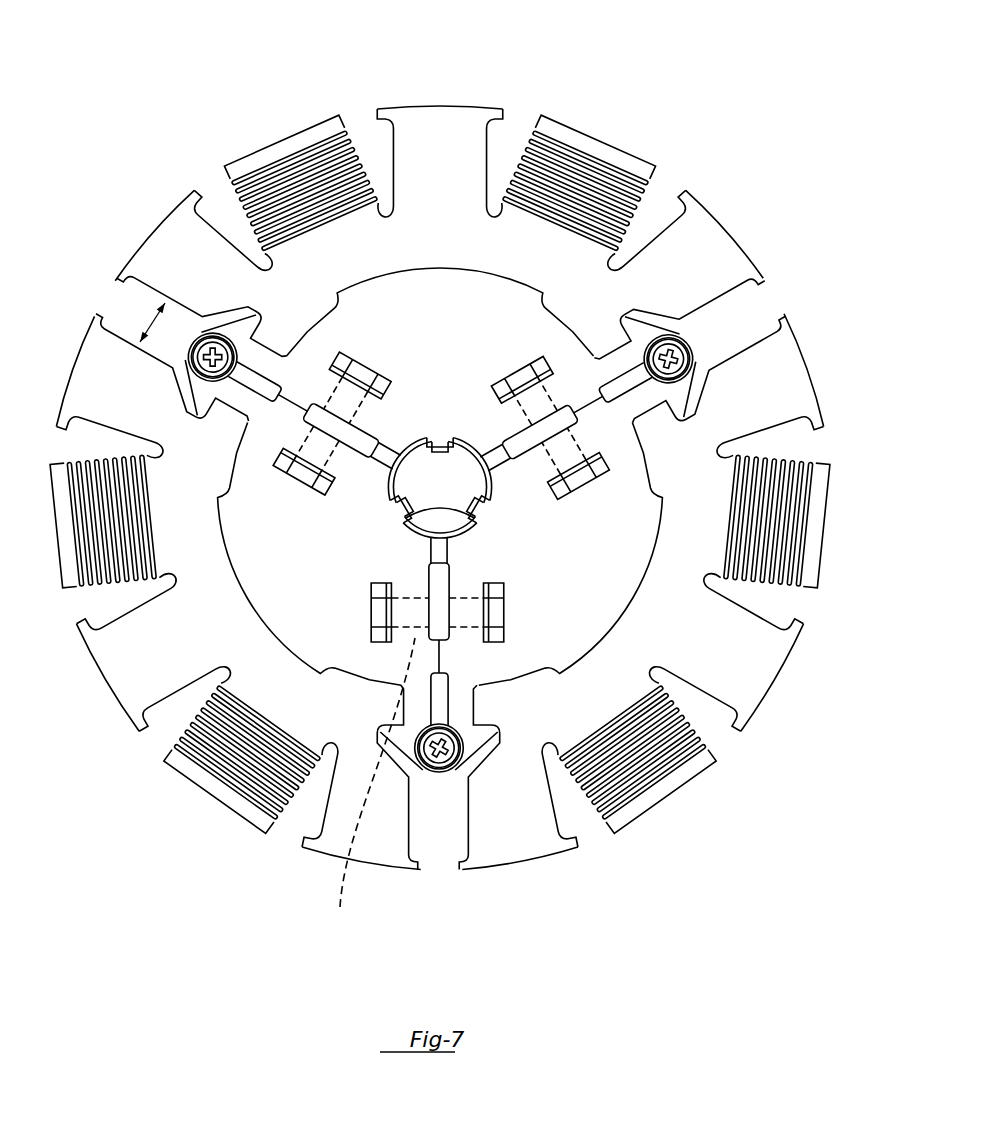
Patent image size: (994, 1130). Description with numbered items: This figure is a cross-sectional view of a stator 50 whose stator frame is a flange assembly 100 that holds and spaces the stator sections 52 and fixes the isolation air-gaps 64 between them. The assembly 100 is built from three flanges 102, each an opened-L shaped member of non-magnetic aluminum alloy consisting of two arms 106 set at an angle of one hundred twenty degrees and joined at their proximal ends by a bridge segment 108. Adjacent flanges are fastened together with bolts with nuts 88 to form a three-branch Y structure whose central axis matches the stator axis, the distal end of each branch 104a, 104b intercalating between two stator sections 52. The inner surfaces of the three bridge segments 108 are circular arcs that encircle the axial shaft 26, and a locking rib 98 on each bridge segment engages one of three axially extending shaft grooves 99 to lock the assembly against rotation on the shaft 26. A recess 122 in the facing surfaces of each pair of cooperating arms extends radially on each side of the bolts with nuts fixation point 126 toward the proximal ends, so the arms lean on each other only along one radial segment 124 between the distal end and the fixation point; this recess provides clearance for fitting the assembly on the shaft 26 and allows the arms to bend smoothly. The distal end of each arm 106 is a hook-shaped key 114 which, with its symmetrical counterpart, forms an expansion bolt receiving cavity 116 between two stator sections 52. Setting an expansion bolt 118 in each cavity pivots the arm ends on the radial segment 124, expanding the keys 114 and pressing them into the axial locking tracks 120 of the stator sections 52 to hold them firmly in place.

The axial shaft 26 is at (421, 492).
The stator 50 is at (469, 487).
The stator section 52 is at (747, 267).
The isolation air-gap 64 is at (155, 318).
The bolts with nuts 88 is at (504, 431).
The locking rib 98 is at (480, 513).
The shaft groove 99 is at (467, 573).
The flange assembly 100 is at (386, 560).
The flange 102 is at (547, 363).
The branch 104a is at (408, 568).
The branch 104b is at (495, 572).
The arm 106 is at (308, 356).
The bridge segment 108 is at (439, 430).
The hook-shaped key 114 is at (239, 320).
The expansion bolt receiving cavity 116 is at (437, 773).
The expansion bolt 118 is at (207, 343).
The axial locking track 120 is at (314, 326).
The recess 122 is at (531, 450).
The radial segment 124 is at (590, 403).
The bolts with nuts fixation point 126 is at (368, 789).